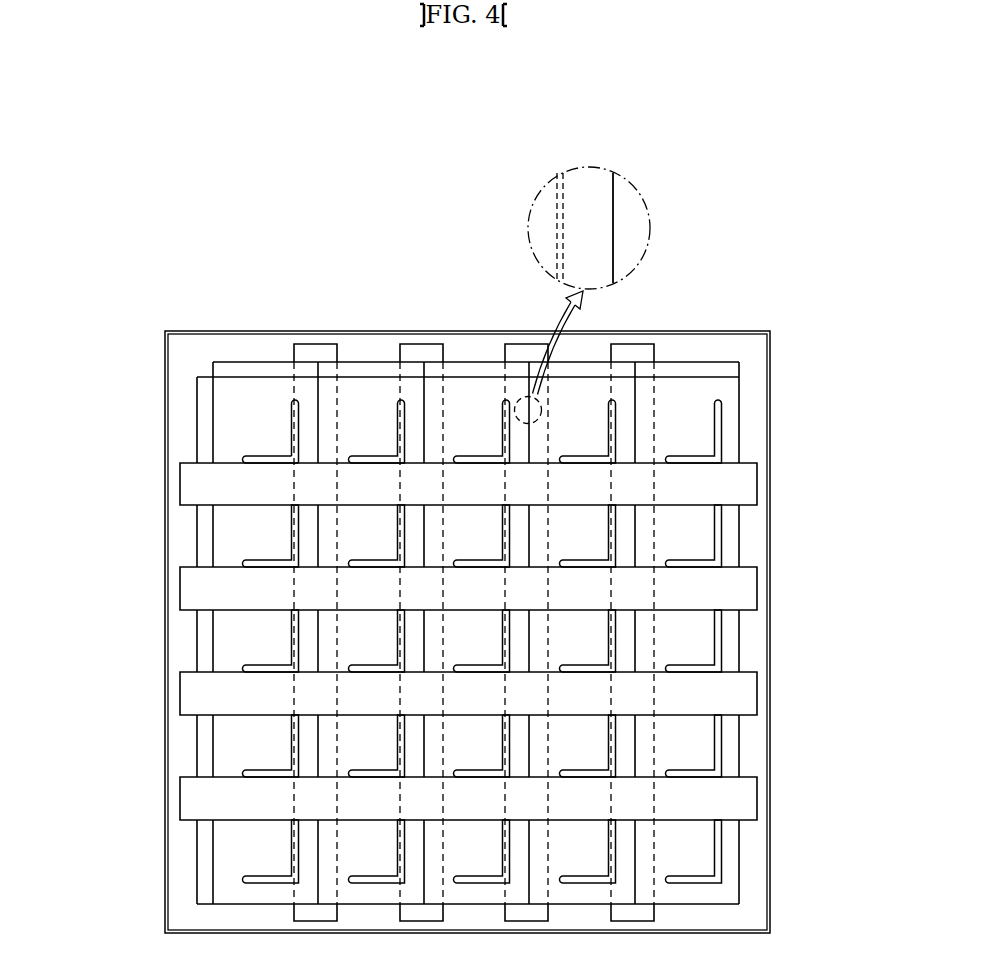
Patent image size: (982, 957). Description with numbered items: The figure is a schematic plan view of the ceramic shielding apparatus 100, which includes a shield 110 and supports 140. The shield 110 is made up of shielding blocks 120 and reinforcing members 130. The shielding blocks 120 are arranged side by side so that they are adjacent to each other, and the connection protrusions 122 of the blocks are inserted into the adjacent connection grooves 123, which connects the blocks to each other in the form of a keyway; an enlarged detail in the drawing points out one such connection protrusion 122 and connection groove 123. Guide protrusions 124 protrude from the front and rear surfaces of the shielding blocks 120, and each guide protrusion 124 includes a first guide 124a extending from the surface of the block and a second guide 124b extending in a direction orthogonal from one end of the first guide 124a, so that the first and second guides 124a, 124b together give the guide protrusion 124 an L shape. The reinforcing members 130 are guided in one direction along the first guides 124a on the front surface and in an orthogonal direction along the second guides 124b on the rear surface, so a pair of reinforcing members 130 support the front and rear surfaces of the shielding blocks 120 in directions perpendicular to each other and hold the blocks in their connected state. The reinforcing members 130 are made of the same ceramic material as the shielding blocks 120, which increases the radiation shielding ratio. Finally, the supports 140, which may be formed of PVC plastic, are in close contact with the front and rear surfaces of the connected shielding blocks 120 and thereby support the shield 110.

The ceramic shielding apparatus 100 is at (453, 115).
The shield 110 is at (838, 612).
The shielding blocks 120 is at (730, 650).
The connection protrusions 122 is at (600, 220).
The connection grooves 123 is at (565, 200).
The guide protrusions 124 is at (85, 380).
The first guide 124a is at (258, 458).
The second guide 124b is at (290, 428).
The reinforcing members 130 is at (642, 915).
The supports 140 is at (755, 350).